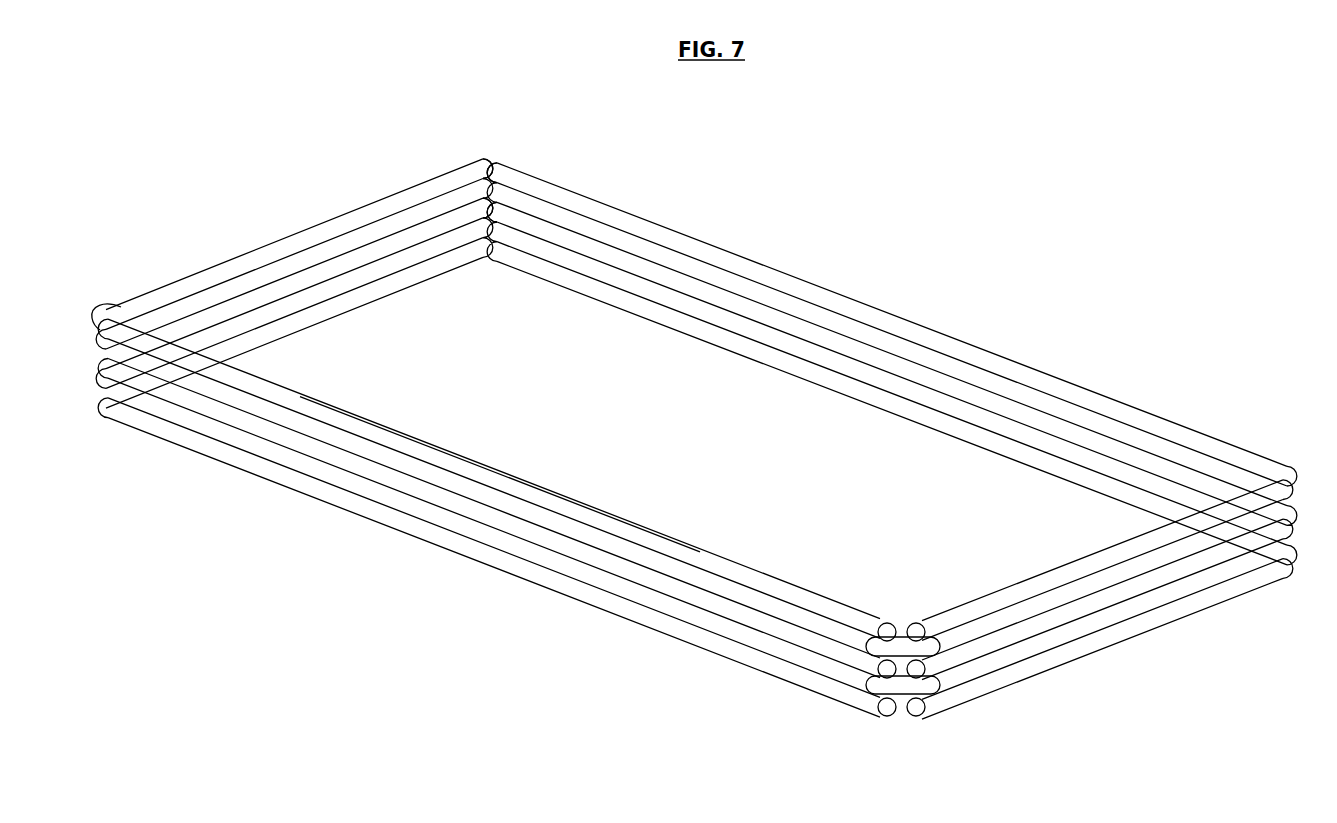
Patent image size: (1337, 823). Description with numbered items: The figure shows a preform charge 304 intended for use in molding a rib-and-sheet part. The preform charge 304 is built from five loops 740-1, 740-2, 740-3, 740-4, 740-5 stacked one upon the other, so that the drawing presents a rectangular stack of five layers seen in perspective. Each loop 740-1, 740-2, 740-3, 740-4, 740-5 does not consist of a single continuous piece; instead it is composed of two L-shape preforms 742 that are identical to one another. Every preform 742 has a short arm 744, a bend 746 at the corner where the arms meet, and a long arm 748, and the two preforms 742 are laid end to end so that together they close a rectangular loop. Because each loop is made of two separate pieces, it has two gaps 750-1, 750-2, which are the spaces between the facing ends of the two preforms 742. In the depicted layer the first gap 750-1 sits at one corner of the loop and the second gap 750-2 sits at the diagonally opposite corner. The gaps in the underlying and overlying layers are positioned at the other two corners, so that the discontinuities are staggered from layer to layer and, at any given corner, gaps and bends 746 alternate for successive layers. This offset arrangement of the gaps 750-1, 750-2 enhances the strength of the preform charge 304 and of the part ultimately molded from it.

The preform charge 304 is at (951, 191).
The L-shape preform 742 is at (302, 191).
The short arm 744 is at (287, 247).
The bend 746 is at (115, 311).
The long arm 748 is at (478, 476).
The first gap 750-1 is at (482, 163).
The second gap 750-2 is at (908, 614).
The first loop 740-1 is at (537, 585).
The second loop 740-2 is at (476, 535).
The third loop 740-3 is at (418, 497).
The fourth loop 740-4 is at (360, 448).
The fifth loop 740-5 is at (307, 410).